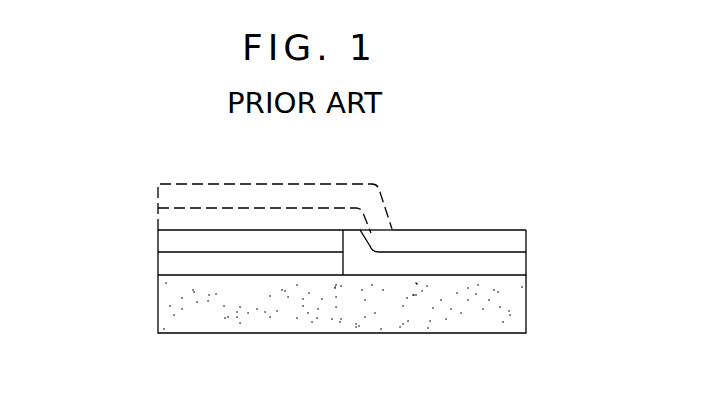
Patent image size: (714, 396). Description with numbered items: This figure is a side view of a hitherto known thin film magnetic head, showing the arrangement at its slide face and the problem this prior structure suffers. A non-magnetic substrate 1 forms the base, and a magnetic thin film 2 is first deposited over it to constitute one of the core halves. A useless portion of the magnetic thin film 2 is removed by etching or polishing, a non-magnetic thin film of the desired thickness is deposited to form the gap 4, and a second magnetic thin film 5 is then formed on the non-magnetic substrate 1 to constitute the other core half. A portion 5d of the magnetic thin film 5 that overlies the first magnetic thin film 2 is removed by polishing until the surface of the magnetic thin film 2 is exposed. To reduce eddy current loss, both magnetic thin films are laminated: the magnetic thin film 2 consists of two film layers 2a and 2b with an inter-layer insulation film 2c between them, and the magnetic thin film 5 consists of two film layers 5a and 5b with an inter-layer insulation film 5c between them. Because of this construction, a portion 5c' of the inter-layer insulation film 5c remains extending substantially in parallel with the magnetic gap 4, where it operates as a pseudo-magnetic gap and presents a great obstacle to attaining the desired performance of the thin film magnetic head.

The non-magnetic substrate 1 is at (527, 305).
The magnetic thin film 2 is at (202, 271).
The film layer 2a is at (158, 240).
The film layer 2b is at (158, 261).
The inter-layer insulation film 2c is at (237, 253).
The gap 4 is at (341, 262).
The magnetic thin film 5 is at (391, 213).
The film layer 5a is at (527, 263).
The film layer 5b is at (527, 240).
The inter-layer insulation film 5c is at (452, 225).
The portion of inter-layer insulation film 5c' is at (398, 222).
The portion of magnetic thin film 5d is at (360, 183).